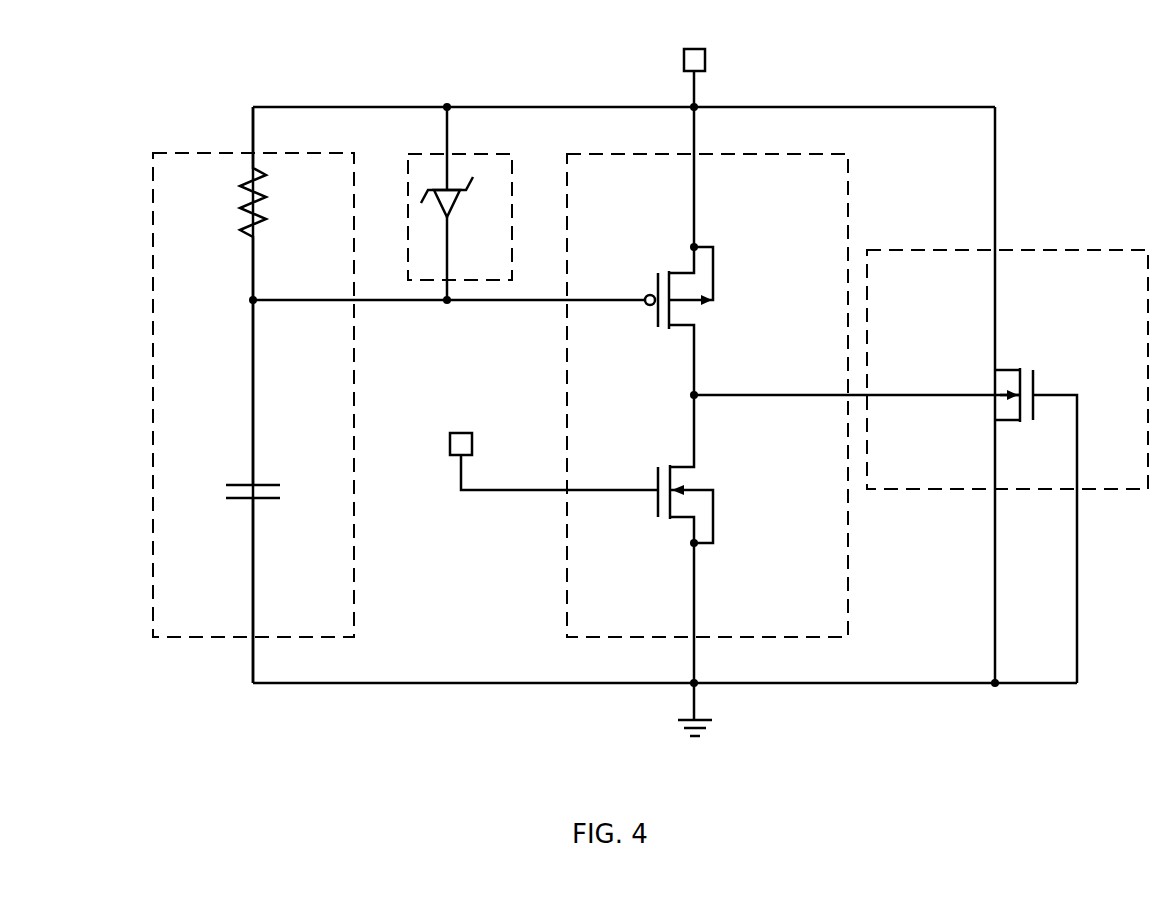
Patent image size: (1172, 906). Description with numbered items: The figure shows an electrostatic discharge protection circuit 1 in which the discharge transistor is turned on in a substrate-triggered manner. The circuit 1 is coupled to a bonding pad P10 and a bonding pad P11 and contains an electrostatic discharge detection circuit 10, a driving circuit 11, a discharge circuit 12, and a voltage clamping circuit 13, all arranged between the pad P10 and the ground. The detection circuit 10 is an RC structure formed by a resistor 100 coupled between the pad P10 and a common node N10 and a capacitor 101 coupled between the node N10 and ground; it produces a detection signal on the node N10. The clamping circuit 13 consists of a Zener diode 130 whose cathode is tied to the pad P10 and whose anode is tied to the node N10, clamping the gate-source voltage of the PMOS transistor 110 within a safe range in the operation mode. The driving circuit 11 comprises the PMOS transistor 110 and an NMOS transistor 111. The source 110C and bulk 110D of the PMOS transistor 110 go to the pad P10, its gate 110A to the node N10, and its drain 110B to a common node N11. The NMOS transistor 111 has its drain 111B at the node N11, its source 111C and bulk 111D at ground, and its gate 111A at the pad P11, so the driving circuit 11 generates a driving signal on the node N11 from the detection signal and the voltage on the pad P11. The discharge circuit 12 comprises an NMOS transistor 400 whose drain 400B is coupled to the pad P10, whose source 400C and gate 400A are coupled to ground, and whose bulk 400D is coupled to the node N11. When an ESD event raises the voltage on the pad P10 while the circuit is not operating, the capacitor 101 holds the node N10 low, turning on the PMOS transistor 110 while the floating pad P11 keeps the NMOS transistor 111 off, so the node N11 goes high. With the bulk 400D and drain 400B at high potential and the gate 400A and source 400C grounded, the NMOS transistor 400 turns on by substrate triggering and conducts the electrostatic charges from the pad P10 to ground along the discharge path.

The electrostatic discharge protection circuit 1 is at (60, 68).
The electrostatic discharge detection circuit 10 is at (153, 153).
The resistor 100 is at (262, 193).
The capacitor 101 is at (265, 484).
The common node N10 is at (250, 300).
The voltage clamping circuit 13 is at (487, 154).
The Zener diode 130 is at (455, 219).
The bonding pad P10 is at (706, 60).
The bonding pad P11 is at (461, 432).
The driving circuit 11 is at (567, 154).
The PMOS transistor 110 is at (724, 236).
The gate 110A is at (640, 302).
The drain 110B is at (692, 337).
The source 110C is at (690, 262).
The bulk 110D is at (698, 306).
The common node N11 is at (700, 392).
The NMOS transistor 111 is at (728, 556).
The gate 111A is at (636, 493).
The drain 111B is at (694, 455).
The source 111C is at (693, 528).
The bulk 111D is at (735, 465).
The discharge circuit 12 is at (867, 250).
The NMOS transistor 400 is at (1028, 332).
The gate 400A is at (1085, 368).
The drain 400B is at (993, 360).
The source 400C is at (993, 432).
The bulk 400D is at (1012, 392).